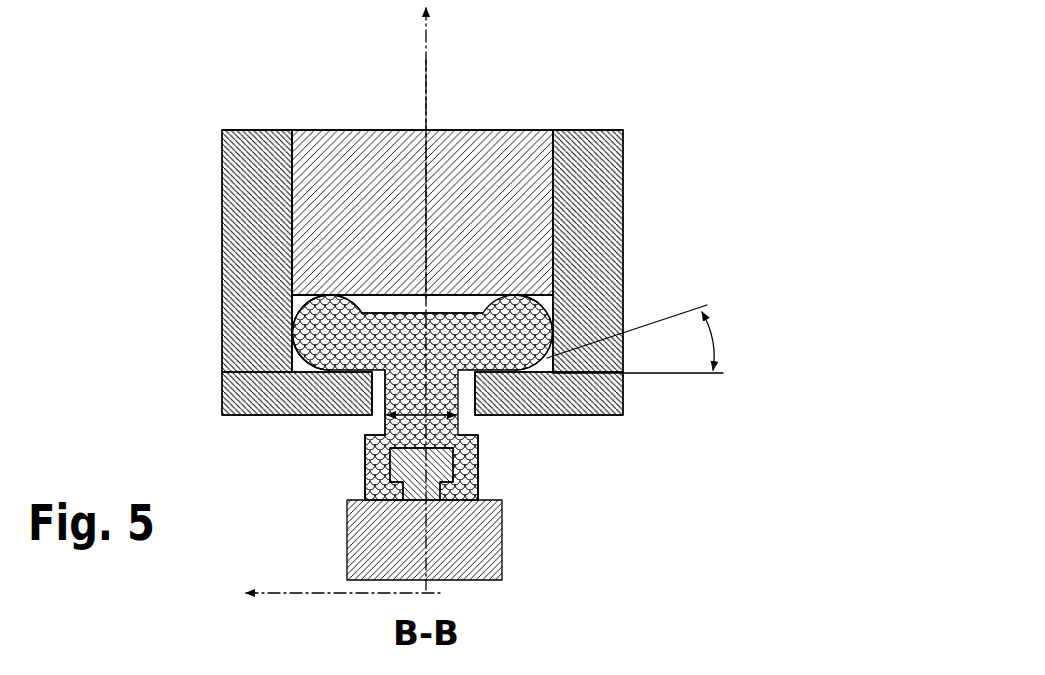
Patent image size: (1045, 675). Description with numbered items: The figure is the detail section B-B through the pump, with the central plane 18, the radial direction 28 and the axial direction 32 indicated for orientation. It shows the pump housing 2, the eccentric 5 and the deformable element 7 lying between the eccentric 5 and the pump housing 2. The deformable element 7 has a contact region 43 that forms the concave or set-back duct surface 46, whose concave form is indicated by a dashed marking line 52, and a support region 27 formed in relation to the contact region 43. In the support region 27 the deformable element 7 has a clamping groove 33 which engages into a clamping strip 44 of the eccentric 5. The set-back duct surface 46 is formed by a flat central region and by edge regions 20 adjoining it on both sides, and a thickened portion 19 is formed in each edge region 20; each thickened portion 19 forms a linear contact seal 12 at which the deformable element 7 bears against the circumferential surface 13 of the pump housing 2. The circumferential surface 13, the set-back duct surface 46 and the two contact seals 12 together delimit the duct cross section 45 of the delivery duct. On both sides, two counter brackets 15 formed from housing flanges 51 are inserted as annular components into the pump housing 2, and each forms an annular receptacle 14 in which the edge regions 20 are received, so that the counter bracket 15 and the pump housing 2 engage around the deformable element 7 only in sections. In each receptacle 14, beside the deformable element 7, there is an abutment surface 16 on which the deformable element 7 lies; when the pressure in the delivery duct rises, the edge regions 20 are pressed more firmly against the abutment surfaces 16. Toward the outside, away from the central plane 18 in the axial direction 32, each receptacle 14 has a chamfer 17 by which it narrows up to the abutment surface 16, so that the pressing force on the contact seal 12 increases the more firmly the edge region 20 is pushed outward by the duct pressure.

The pump housing 2 is at (555, 130).
The eccentric 5 is at (502, 552).
The deformable element 7 is at (365, 457).
The contact seal 12 is at (368, 310).
The circumferential surface 13 is at (480, 297).
The annular receptacle 14 is at (335, 374).
The counter bracket 15 is at (340, 400).
The abutment surface 16 is at (318, 332).
The chamfer 17 is at (712, 338).
The central plane 18 is at (425, 122).
The thickened portion 19 is at (320, 300).
The edge region 20 is at (310, 308).
The support region 27 is at (482, 483).
The radial direction 28 is at (428, 70).
The axial direction 32 is at (278, 592).
The clamping groove 33 is at (365, 494).
The contact region 43 is at (330, 352).
The clamping strip 44 is at (427, 483).
The duct cross section 45 is at (402, 303).
The set-back duct surface 46 is at (432, 305).
The housing flange 51 is at (222, 348).
The marking line 52 is at (228, 130).